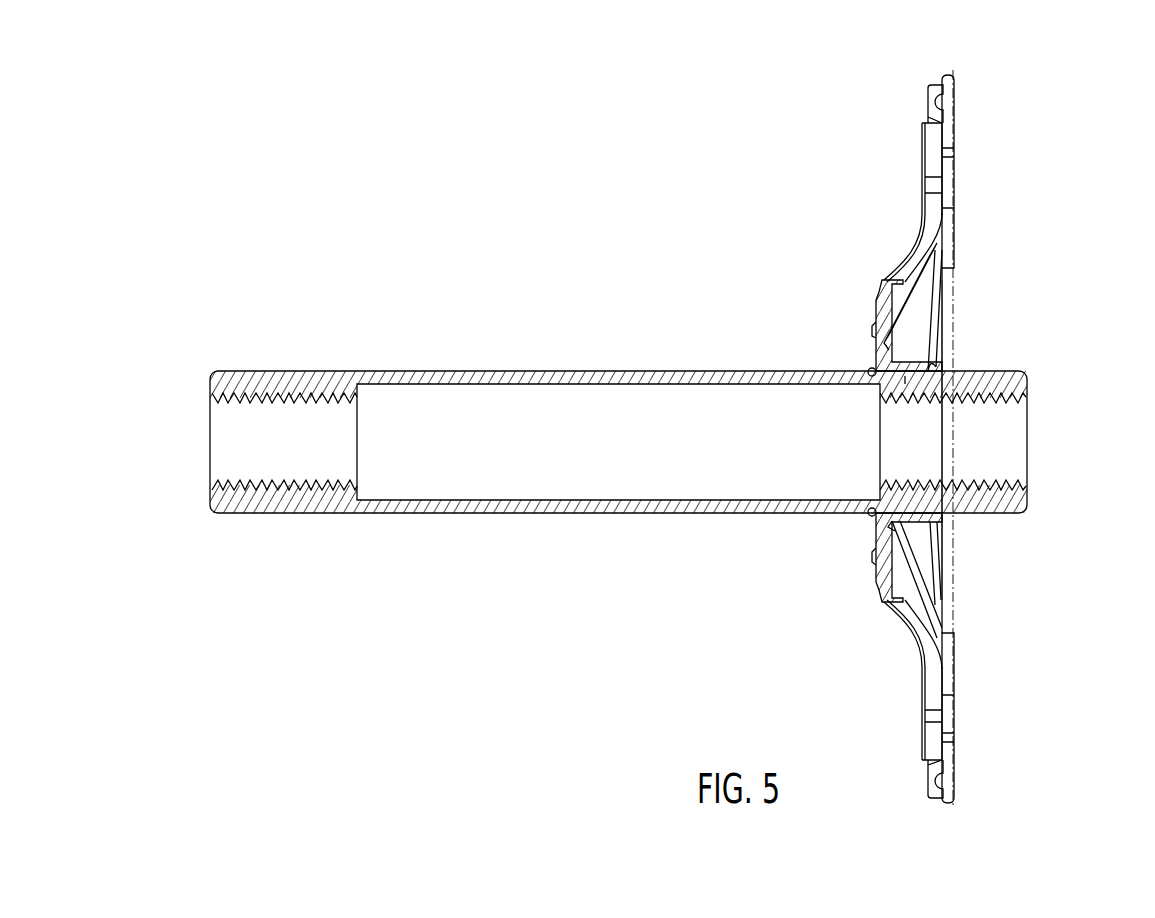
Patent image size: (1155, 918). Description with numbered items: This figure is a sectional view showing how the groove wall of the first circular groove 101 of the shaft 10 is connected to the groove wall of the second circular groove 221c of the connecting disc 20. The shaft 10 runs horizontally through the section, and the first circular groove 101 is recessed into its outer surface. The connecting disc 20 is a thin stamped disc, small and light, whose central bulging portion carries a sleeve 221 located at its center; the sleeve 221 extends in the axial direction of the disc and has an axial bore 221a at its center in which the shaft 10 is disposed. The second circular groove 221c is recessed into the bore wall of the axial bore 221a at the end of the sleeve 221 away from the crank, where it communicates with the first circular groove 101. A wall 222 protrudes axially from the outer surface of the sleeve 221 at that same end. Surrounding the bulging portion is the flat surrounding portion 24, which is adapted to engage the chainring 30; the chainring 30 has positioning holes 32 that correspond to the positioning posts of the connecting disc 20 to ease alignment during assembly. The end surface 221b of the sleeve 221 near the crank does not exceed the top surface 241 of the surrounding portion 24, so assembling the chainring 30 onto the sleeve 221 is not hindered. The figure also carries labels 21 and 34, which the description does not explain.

The shaft 10 is at (433, 366).
The first circular groove 101 is at (876, 386).
The connecting disc 20 is at (905, 688).
The collar 21 is at (878, 275).
The sleeve 221 is at (884, 538).
The axial bore 221a is at (908, 374).
The end surface 221b is at (940, 363).
The second circular groove 221c is at (870, 366).
The wall 222 is at (877, 524).
The surrounding portion 24 is at (918, 133).
The top surface 241 is at (945, 157).
The chainring 30 is at (962, 126).
The positioning holes 32 is at (955, 268).
The stem head 34 is at (947, 150).